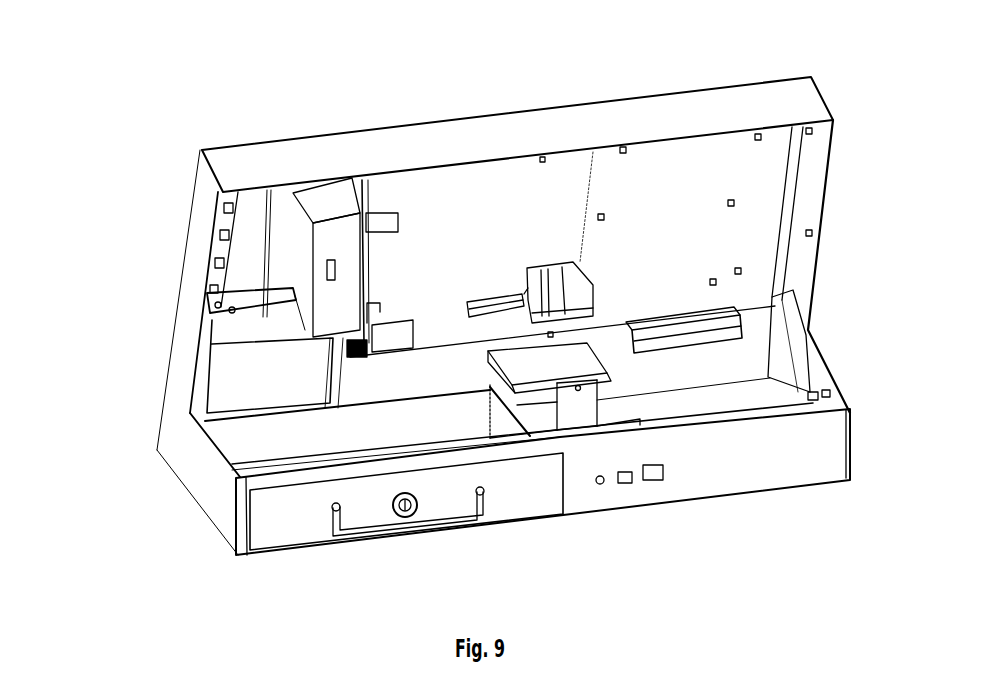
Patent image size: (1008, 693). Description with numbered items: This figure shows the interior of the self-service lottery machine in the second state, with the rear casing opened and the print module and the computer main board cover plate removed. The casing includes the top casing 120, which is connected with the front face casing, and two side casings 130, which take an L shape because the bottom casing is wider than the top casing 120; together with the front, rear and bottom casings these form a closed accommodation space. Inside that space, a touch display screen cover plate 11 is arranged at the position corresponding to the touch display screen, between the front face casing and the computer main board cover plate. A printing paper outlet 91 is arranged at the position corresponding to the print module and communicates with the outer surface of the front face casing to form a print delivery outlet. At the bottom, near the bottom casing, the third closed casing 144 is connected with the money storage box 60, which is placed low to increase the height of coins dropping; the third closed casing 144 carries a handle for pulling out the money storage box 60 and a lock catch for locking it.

The top casing 120 is at (322, 158).
The touch display screen cover plate 11 is at (470, 252).
The side casing 130 is at (173, 442).
The money storage box 60 is at (273, 447).
The third closed casing 144 is at (297, 517).
The printing paper outlet 91 is at (740, 338).